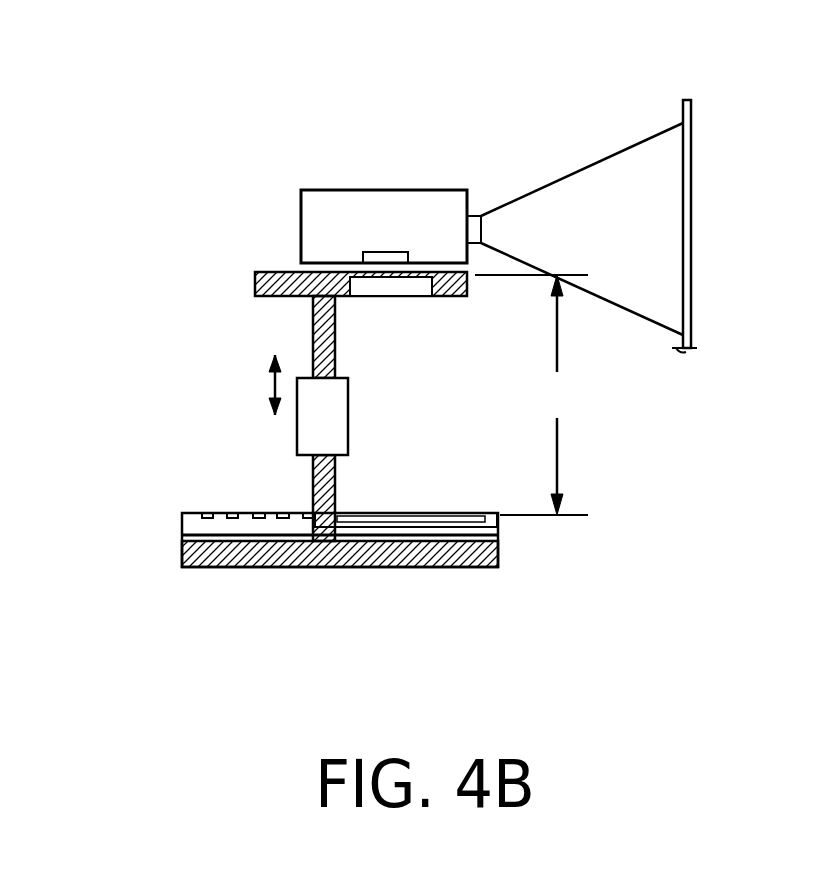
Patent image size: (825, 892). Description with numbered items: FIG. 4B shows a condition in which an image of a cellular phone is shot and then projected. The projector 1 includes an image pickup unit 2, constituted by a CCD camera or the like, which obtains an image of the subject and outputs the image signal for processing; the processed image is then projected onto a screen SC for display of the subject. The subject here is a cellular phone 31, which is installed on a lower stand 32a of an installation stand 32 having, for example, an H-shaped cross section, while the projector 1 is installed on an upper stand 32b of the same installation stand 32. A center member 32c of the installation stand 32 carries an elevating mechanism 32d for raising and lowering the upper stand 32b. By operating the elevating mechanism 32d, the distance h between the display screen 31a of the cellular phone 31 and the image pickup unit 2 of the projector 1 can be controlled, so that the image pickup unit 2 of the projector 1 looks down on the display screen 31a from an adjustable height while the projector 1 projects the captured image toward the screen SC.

The projector 1 is at (335, 208).
The image pickup unit 2 is at (388, 250).
The screen SC is at (691, 155).
The cellular phone 31 is at (181, 513).
The display screen 31a is at (414, 516).
The installation stand 32 is at (310, 483).
The lower stand 32a is at (181, 561).
The upper stand 32b is at (276, 298).
The center member 32c is at (338, 328).
The elevating mechanism 32d is at (323, 407).
The distance h is at (531, 395).